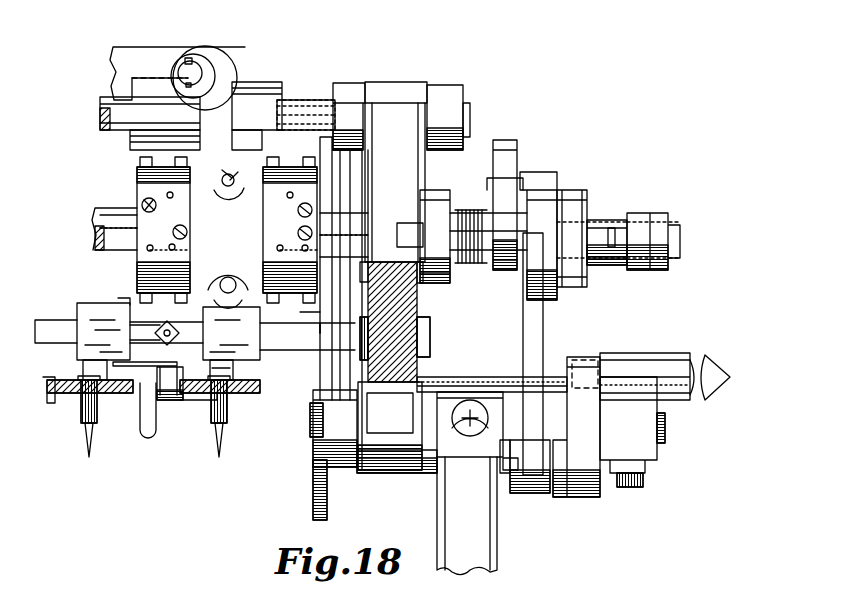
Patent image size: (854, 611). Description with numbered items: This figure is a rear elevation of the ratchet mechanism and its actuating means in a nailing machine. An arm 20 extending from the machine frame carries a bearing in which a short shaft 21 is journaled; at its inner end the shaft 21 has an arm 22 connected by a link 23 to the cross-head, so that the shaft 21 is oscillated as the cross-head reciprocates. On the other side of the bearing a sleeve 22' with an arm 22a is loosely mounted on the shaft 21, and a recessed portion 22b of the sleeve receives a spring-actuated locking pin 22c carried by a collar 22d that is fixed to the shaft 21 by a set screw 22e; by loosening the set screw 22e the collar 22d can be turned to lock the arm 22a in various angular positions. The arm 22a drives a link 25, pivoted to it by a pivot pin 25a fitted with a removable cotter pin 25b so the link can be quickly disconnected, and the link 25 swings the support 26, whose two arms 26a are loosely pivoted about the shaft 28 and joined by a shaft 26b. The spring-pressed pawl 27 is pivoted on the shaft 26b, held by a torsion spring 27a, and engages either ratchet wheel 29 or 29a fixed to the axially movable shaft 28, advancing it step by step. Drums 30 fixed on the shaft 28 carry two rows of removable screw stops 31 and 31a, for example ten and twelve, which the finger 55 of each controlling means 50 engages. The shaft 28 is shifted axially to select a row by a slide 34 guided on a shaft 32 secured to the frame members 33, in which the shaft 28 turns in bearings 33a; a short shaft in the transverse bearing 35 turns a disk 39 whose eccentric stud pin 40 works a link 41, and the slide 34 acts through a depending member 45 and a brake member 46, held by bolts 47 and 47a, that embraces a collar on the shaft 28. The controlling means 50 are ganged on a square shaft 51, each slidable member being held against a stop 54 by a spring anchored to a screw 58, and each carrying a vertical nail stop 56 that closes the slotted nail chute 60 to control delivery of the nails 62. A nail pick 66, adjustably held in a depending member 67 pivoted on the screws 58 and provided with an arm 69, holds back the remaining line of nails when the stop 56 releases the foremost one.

The arm 20 is at (480, 553).
The short shaft 21 is at (310, 425).
The arm 22 is at (321, 435).
The sleeve 22' is at (496, 360).
The arm 22a is at (588, 497).
The recessed portion 22b is at (578, 358).
The spring-actuated locking pin 22c is at (600, 360).
The collar 22d is at (665, 355).
The set screw 22e is at (643, 482).
The link 23 is at (313, 496).
The actuating link 25 is at (524, 320).
The pivot pin 25a is at (500, 478).
The removable cotter pin 25b is at (514, 486).
The swinging support 26 is at (578, 174).
The arms 26a is at (448, 198).
The shaft 26b is at (612, 228).
The spring-pressed pawl 27 is at (505, 148).
The torsion spring 27a is at (470, 265).
The shaft 28 is at (96, 208).
The ratchet wheel 29 is at (540, 178).
The ratchet wheel 29a is at (490, 285).
The drum 30 is at (137, 180).
The stops 31 is at (188, 232).
The stops 31a is at (138, 155).
The shaft 32 is at (112, 122).
The frame members 33 is at (405, 186).
The bearings 33a is at (360, 165).
The slide member 34 is at (256, 86).
The transverse bearing 35 is at (214, 50).
The disk 39 is at (222, 64).
The stud pin 40 is at (187, 66).
The link 41 is at (128, 58).
The depending member 45 is at (236, 150).
The brake member 46 is at (255, 208).
The bolt 47 is at (228, 276).
The bolt 47a is at (230, 172).
The controlling means 50 is at (95, 303).
The square shaft 51 is at (58, 320).
The stop 54 is at (160, 325).
The finger 55 is at (122, 300).
The nail stop 56 is at (233, 371).
The screw 58 is at (176, 328).
The slotted nail chute 60 is at (97, 414).
The nails 62 is at (91, 440).
The nail pick 66 is at (60, 395).
The depending member 67 is at (190, 374).
The arm 69 is at (147, 368).